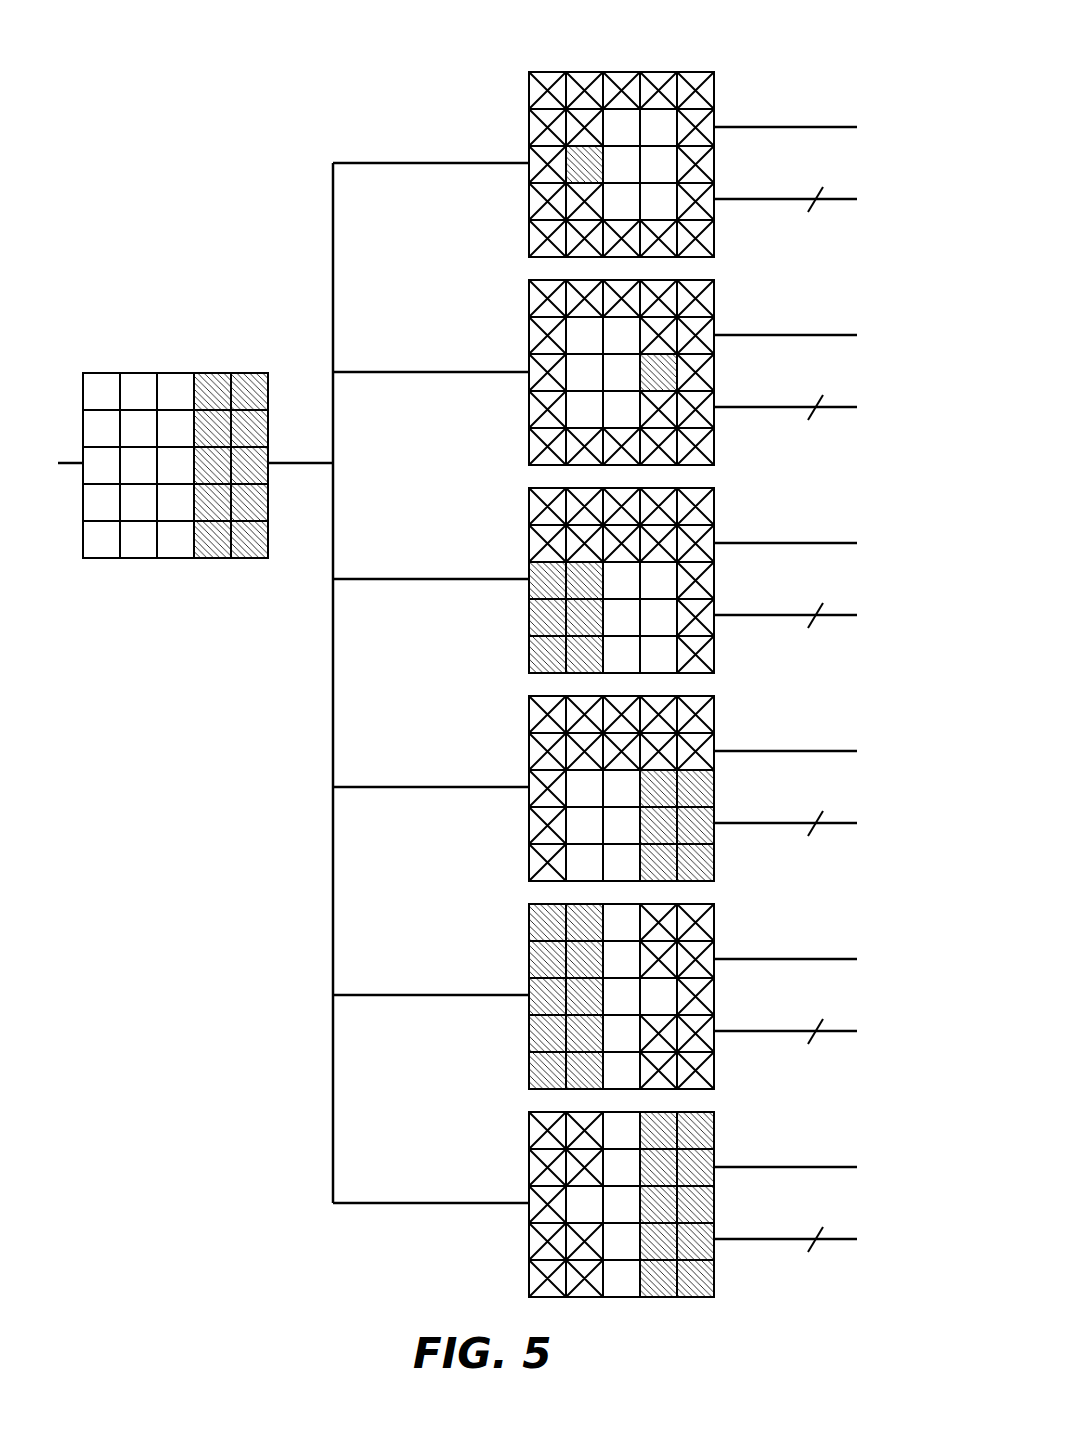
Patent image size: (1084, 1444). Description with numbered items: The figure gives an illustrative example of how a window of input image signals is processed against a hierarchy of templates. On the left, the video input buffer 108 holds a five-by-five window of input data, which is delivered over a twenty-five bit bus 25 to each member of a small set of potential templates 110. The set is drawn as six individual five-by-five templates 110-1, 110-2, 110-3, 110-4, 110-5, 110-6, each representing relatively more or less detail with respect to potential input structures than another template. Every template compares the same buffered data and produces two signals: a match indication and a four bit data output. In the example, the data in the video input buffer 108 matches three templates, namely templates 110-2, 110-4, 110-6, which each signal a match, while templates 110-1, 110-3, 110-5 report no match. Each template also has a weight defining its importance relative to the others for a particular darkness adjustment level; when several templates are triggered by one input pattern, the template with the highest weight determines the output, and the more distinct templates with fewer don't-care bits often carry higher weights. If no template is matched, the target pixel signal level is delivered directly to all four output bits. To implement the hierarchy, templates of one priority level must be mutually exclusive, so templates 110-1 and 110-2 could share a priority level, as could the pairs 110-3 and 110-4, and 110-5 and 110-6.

The video input buffer 108 is at (182, 334).
The 25-bit input bus 25 is at (300, 452).
The set of potential templates 110 is at (714, 63).
The template 110-1 is at (654, 164).
The template 110-2 is at (654, 372).
The template 110-3 is at (654, 580).
The template 110-4 is at (654, 788).
The template 110-5 is at (654, 996).
The template 110-6 is at (654, 1204).